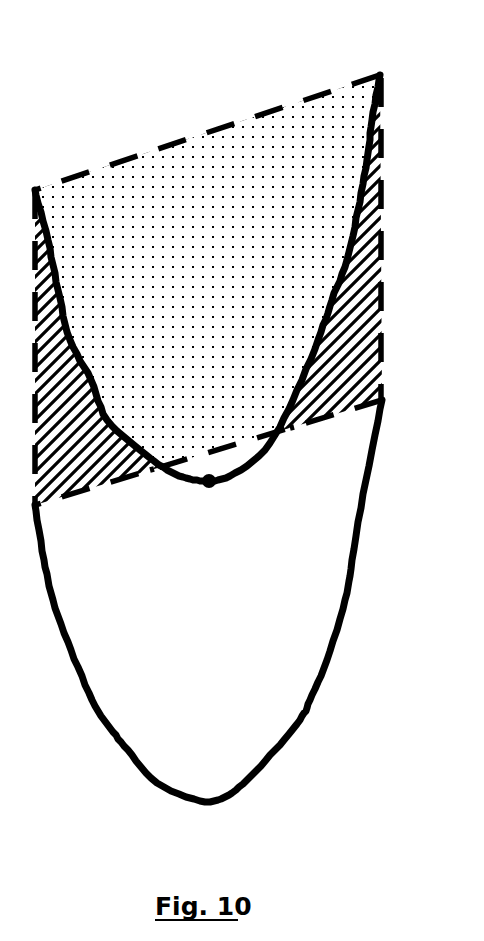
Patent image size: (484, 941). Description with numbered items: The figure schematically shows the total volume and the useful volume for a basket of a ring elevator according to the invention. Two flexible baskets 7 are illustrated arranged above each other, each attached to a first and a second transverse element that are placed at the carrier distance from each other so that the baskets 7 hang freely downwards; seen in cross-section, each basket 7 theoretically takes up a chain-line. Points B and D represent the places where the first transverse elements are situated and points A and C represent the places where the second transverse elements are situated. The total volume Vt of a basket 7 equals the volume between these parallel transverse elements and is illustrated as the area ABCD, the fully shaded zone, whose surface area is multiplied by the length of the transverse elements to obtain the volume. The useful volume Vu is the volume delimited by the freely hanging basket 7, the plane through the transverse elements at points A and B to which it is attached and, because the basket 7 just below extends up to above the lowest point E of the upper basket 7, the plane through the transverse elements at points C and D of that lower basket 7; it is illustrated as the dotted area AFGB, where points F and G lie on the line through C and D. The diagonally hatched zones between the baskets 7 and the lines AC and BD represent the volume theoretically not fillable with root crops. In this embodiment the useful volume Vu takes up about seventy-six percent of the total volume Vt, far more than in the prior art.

The basket 7 is at (348, 265).
The useful volume Vu is at (282, 228).
The total volume Vt is at (80, 413).
The point A is at (198, 132).
The point B is at (391, 223).
The point C is at (22, 364).
The point D is at (223, 451).
The point E is at (211, 499).
The point F is at (153, 488).
The point G is at (291, 445).